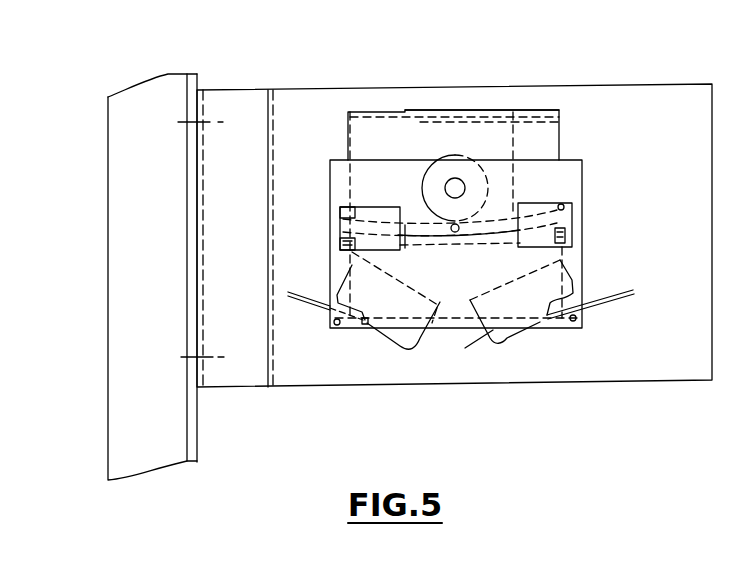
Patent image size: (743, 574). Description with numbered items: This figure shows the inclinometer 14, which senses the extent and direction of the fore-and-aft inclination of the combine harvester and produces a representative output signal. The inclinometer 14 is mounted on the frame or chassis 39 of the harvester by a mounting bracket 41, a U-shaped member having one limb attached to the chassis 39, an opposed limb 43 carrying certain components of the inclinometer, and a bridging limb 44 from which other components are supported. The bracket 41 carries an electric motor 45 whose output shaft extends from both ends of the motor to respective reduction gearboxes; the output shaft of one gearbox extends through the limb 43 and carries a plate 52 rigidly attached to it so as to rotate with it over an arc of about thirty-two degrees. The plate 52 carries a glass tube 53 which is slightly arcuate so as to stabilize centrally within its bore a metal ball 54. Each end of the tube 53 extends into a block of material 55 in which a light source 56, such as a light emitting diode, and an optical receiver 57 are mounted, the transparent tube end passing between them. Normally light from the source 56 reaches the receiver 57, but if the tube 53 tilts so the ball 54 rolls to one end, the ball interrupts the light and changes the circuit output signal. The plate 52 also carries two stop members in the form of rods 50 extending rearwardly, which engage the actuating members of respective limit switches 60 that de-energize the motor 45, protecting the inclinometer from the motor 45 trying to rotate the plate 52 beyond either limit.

The inclinometer 14 is at (572, 145).
The chassis 39 is at (120, 282).
The mounting bracket 41 is at (413, 111).
The limb 43 is at (348, 136).
The bridging limb 44 is at (500, 110).
The electric motor 45 is at (452, 157).
The rods 50 is at (338, 328).
The plate 52 is at (582, 190).
The glass tube 53 is at (493, 231).
The metal ball 54 is at (455, 235).
The block of material 55 is at (342, 244).
The light source 56 is at (346, 209).
The optical receiver 57 is at (598, 261).
The limit switches 60 is at (493, 332).